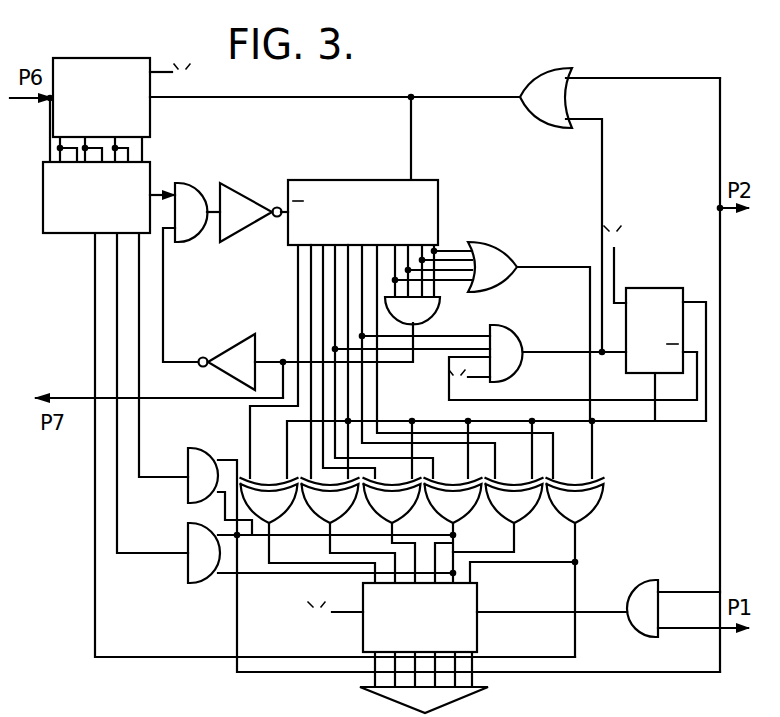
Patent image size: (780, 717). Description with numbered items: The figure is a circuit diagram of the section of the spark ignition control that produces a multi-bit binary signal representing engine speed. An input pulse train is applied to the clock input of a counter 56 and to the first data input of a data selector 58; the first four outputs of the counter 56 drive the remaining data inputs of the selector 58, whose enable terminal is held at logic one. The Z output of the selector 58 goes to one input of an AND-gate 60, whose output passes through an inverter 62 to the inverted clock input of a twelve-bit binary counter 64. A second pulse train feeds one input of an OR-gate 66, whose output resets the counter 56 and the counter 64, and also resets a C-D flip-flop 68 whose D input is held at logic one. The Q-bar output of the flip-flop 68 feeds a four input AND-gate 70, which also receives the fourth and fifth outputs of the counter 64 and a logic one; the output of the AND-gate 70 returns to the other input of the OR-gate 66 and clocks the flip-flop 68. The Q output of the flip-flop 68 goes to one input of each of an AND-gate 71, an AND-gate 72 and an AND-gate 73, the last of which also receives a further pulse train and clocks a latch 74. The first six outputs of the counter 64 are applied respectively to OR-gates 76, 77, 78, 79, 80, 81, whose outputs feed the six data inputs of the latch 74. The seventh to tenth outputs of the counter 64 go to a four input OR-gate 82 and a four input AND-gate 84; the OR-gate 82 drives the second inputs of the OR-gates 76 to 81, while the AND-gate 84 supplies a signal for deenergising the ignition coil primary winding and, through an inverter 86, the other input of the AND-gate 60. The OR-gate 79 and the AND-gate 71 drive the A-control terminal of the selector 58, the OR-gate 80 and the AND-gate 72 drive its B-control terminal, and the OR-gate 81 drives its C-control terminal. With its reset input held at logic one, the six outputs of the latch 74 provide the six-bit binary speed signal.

The counter 56 is at (108, 60).
The data selector 58 is at (66, 233).
The AND-gate 60 is at (182, 183).
The inverter 62 is at (242, 193).
The counter 64 is at (343, 185).
The OR-gate 66 is at (533, 80).
The C-D flip-flop 68 is at (655, 288).
The four input AND-gate 70 is at (507, 332).
The AND-gate 71 is at (200, 460).
The AND-gate 72 is at (197, 540).
The AND-gate 73 is at (644, 583).
The latch 74 is at (363, 628).
The OR-gate 76 is at (278, 505).
The OR-gate 77 is at (339, 505).
The OR-gate 78 is at (401, 505).
The OR-gate 79 is at (460, 507).
The OR-gate 80 is at (522, 507).
The OR-gate 81 is at (583, 507).
The four input OR-gate 82 is at (490, 253).
The four input AND-gate 84 is at (441, 306).
The inverter 86 is at (232, 350).